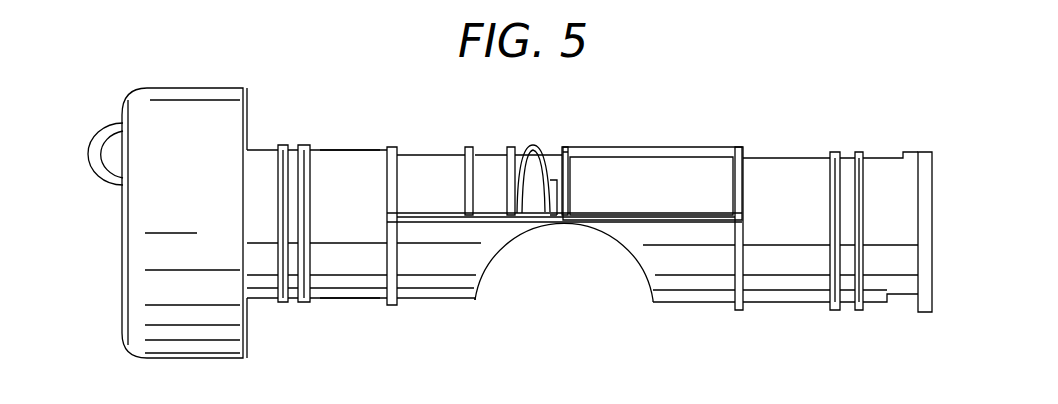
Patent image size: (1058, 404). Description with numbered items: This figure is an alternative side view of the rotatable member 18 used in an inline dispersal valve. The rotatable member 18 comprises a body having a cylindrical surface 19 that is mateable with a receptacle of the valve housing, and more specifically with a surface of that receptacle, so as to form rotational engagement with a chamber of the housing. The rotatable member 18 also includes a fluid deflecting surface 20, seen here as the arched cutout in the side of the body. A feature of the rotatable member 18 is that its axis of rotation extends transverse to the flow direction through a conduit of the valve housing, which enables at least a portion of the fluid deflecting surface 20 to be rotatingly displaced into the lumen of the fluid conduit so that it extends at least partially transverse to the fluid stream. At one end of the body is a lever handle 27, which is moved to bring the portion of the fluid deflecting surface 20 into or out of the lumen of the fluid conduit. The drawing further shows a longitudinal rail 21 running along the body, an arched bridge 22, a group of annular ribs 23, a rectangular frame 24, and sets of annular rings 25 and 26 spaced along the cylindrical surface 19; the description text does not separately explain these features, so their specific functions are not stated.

The rotatable member 18 is at (747, 112).
The cylindrical surface 19 is at (360, 172).
The fluid deflecting surface 20 is at (513, 240).
The longitudinal rail 21 is at (633, 225).
The arched bridge 22 is at (555, 168).
The annular ribs 23 is at (497, 180).
The rectangular frame 24 is at (663, 153).
The annular rings 25 is at (292, 302).
The annular rings 26 is at (840, 312).
The lever handle 27 is at (120, 277).